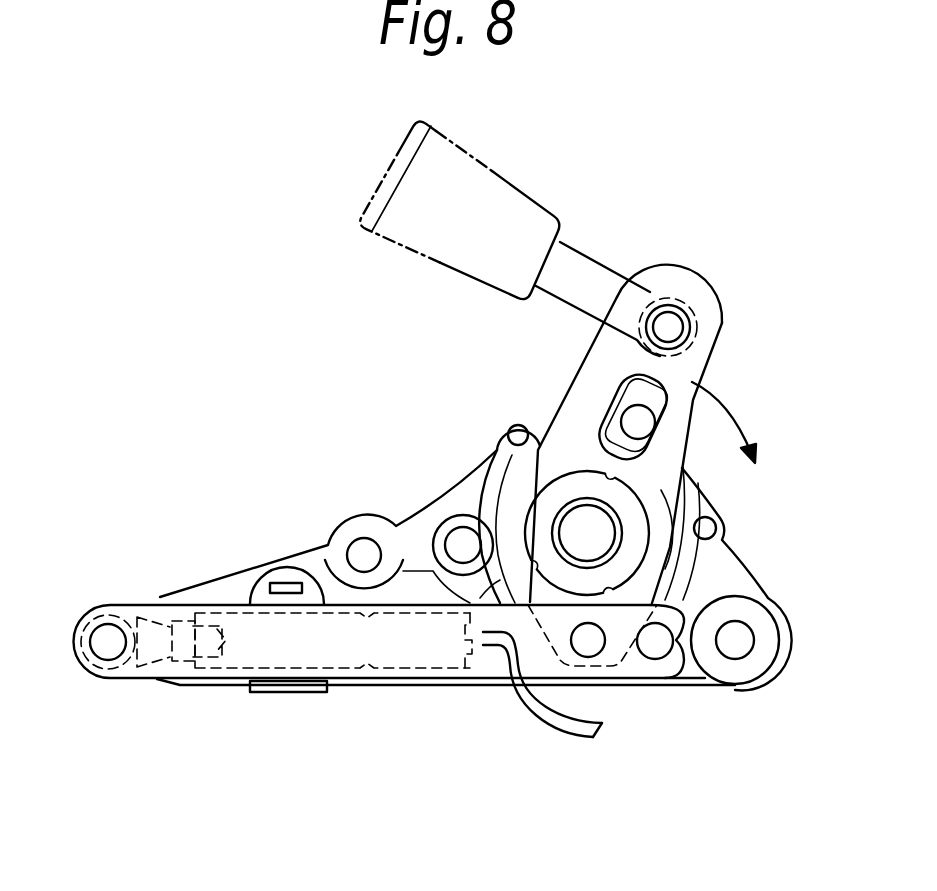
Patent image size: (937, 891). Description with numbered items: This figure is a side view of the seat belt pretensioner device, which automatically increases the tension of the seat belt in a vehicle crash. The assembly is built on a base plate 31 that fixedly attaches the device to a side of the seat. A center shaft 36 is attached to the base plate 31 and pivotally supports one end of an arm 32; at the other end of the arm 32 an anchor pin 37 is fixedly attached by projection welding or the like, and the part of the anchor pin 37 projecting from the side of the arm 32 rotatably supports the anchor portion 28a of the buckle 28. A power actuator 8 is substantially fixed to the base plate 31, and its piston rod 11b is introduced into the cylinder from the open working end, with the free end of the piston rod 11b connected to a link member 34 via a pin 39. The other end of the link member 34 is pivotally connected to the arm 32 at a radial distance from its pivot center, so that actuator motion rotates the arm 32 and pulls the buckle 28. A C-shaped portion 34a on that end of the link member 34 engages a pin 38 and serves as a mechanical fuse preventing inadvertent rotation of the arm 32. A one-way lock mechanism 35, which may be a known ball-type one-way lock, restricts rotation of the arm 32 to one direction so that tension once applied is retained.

The power actuator 8 is at (420, 668).
The piston rod 11b is at (160, 657).
The buckle 28 is at (510, 168).
The anchor portion 28a is at (690, 347).
The base plate 31 is at (274, 558).
The arm 32 is at (592, 358).
The link member 34 is at (127, 683).
The C-shaped portion 34a is at (676, 668).
The one-way lock mechanism 35 is at (680, 560).
The center shaft 36 is at (627, 517).
The anchor pin 37 is at (675, 313).
The pin 38 is at (653, 650).
The pin 39 is at (103, 645).